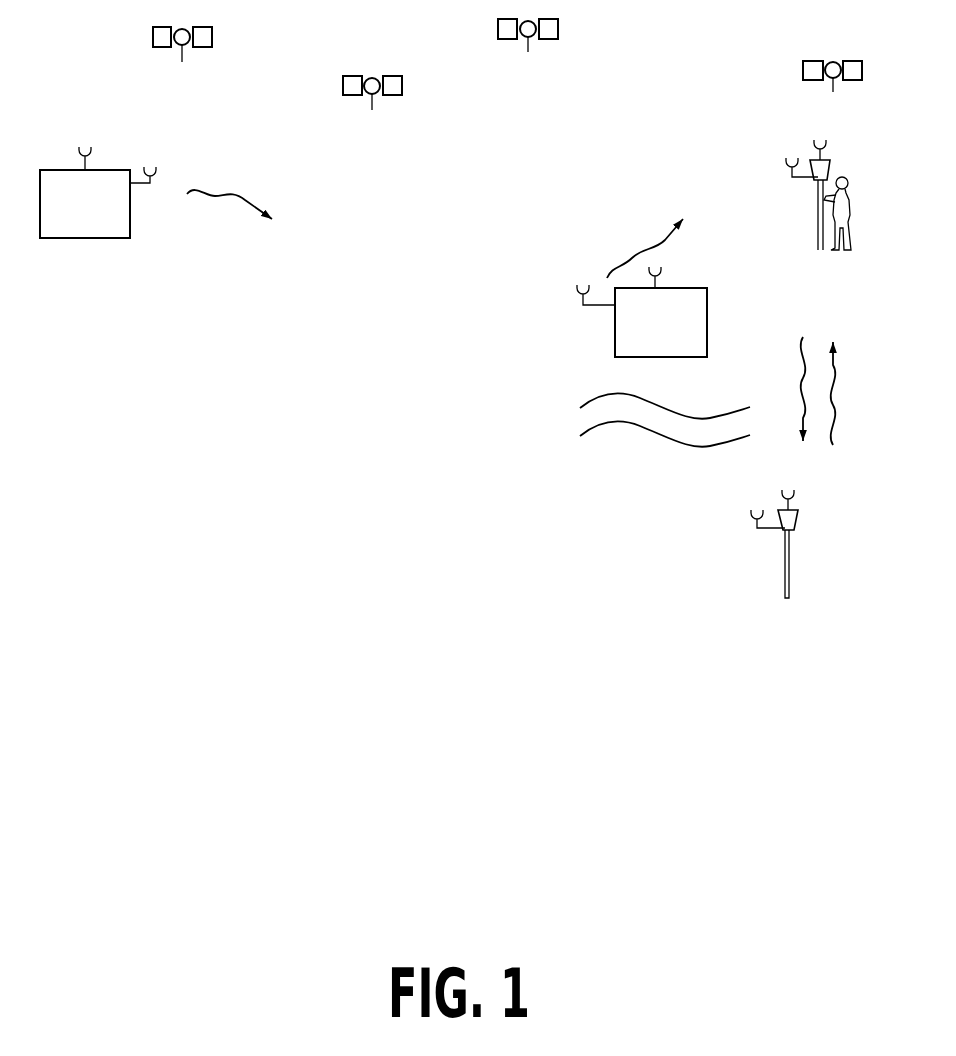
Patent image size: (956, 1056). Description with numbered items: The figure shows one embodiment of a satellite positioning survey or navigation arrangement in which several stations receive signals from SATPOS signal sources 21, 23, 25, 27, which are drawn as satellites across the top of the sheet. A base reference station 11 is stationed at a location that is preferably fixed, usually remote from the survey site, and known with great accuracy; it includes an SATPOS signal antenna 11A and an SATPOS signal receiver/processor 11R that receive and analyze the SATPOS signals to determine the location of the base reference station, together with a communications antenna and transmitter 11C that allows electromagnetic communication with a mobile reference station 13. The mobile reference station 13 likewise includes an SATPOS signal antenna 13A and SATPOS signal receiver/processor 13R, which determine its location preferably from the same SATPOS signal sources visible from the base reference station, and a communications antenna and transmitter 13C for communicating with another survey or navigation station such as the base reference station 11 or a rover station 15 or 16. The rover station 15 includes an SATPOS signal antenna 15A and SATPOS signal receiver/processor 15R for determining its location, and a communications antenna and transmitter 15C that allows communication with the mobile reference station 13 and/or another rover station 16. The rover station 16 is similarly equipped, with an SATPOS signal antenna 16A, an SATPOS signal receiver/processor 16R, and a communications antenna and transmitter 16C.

The base reference station 11 is at (122, 126).
The SATPOS signal antenna 11A is at (93, 158).
The communications antenna and transmitter 11C is at (158, 173).
The SATPOS signal receiver/processor 11R is at (130, 210).
The mobile reference station 13 is at (563, 266).
The SATPOS signal antenna 13A is at (663, 272).
The communications antenna and transmitter 13C is at (585, 307).
The SATPOS signal receiver/processor 13R is at (707, 305).
The rover station 15 is at (728, 139).
The SATPOS signal antenna 15A is at (827, 152).
The communications antenna and transmitter 15C is at (789, 173).
The SATPOS signal receiver/processor 15R is at (830, 168).
The rover station 16 is at (685, 526).
The SATPOS signal antenna 16A is at (793, 505).
The communications antenna and transmitter 16C is at (755, 525).
The SATPOS signal receiver/processor 16R is at (797, 519).
The SATPOS signal source 21 is at (182, 61).
The SATPOS signal source 23 is at (372, 108).
The SATPOS signal source 25 is at (528, 52).
The SATPOS signal source 27 is at (832, 93).